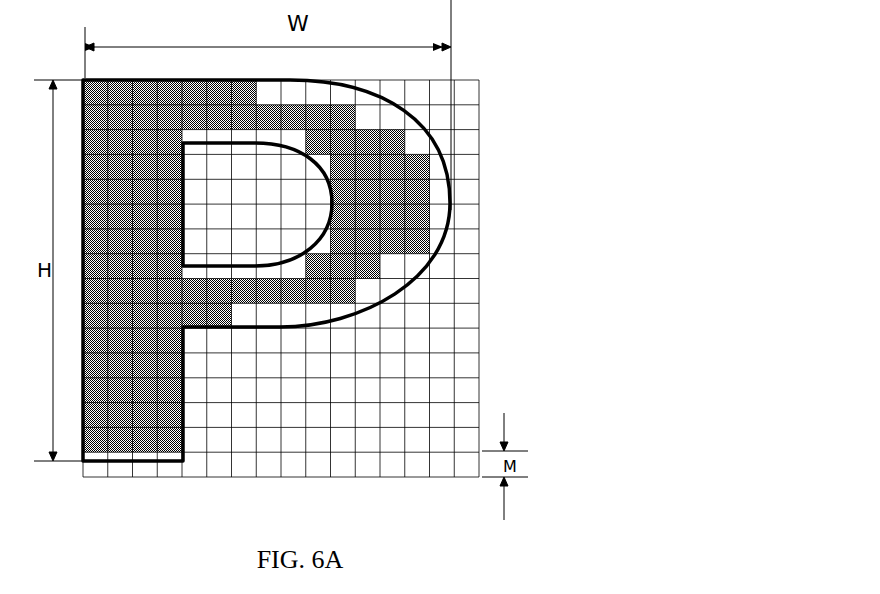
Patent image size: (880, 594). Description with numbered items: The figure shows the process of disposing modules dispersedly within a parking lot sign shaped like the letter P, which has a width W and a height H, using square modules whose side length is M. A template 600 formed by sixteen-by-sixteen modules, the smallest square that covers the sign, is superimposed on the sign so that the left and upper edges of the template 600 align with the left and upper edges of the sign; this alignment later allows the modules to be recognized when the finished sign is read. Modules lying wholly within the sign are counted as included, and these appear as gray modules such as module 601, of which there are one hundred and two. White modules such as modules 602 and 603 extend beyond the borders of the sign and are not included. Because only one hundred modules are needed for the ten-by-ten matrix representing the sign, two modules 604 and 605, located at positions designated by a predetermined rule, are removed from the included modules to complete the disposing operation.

The template 600 is at (477, 80).
The gray module 601 is at (407, 143).
The module to be removed 604 is at (430, 210).
The module to be removed 605 is at (428, 238).
The white module 602 is at (440, 268).
The white module 603 is at (410, 262).